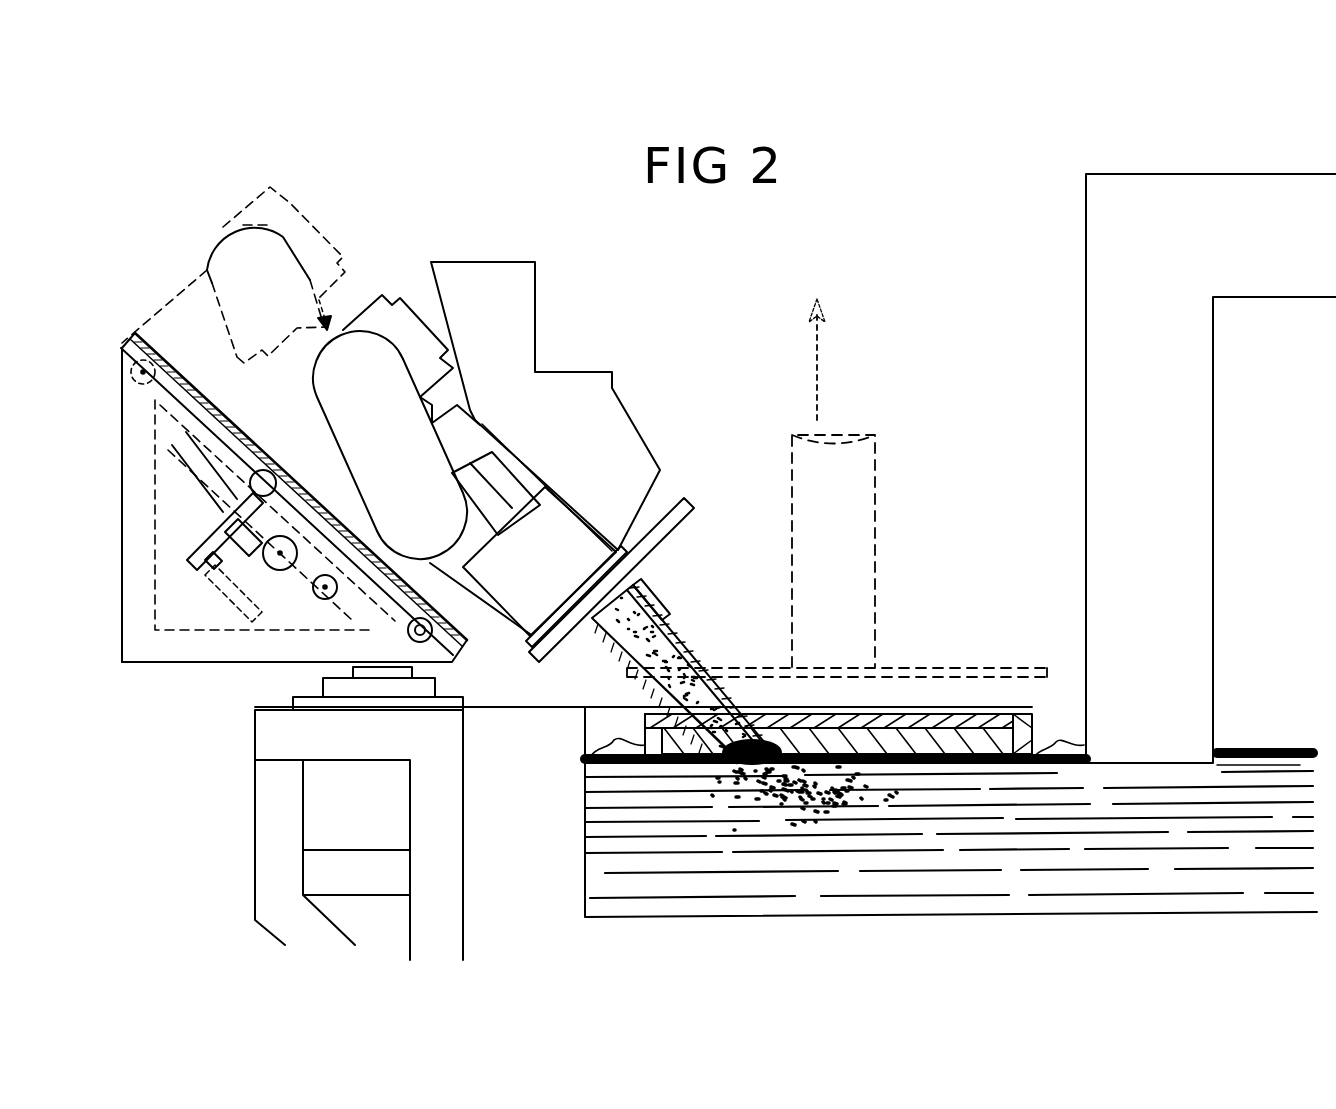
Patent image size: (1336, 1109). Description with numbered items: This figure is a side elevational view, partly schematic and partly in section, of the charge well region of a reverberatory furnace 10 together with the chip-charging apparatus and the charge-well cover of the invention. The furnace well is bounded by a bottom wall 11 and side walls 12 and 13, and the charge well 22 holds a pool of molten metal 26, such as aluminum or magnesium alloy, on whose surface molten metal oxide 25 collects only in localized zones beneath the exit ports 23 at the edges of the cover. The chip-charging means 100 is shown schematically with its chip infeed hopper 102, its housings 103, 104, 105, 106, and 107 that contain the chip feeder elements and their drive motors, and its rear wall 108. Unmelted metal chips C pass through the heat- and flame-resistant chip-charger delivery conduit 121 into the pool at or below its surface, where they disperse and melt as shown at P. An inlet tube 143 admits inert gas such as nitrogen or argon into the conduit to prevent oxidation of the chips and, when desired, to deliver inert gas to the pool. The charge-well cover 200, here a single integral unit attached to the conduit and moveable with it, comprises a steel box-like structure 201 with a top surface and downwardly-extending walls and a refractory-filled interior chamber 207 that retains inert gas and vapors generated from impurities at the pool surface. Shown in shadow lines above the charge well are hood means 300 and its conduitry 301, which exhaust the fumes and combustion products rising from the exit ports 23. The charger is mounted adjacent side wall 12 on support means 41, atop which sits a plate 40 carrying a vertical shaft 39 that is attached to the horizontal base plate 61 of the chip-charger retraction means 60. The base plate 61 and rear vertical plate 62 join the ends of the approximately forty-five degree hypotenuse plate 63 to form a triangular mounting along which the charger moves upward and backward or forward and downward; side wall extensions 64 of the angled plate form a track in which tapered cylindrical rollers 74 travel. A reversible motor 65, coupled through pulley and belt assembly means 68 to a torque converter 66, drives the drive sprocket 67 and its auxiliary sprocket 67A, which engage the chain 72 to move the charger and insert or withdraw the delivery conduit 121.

The reverberatory furnace 10 is at (1072, 197).
The bottom wall 11 is at (929, 954).
The side wall 12 is at (523, 929).
The side wall 13 is at (1150, 463).
The charge well 22 is at (575, 830).
The exit ports 23 is at (623, 720).
The molten metal oxide 25 is at (600, 745).
The molten metal 26 is at (833, 892).
The shaft 39 is at (362, 667).
The plate 40 is at (358, 677).
The support means 41 is at (275, 815).
The chip-charger retraction means 60 is at (98, 510).
The horizontal base plate 61 is at (145, 650).
The rear vertical plate 62 is at (130, 455).
The hypotenuse plate 63 is at (123, 377).
The side wall extensions 64 is at (132, 357).
The reversible motor 65 is at (228, 583).
The torque converter 66 is at (262, 532).
The drive sprocket 67 is at (280, 575).
The auxiliary sprocket 67A is at (279, 613).
The pulley and belt assembly means 68 is at (215, 540).
The chain 72 is at (167, 438).
The tapered cylindrical rollers 74 is at (128, 368).
The chip-charging means 100 is at (212, 226).
The chip infeed hopper 102 is at (476, 265).
The housing 103 is at (599, 459).
The housing 104 is at (566, 569).
The housing 105 is at (496, 493).
The housing 106 is at (358, 431).
The housing 107 is at (422, 459).
The rear wall 108 is at (293, 450).
The chip-charger delivery conduit 121 is at (672, 628).
The inlet tube 143 is at (668, 600).
The charge-well cover 200 is at (958, 700).
The steel box-like structure 201 is at (1040, 717).
The interior chamber 207 is at (917, 727).
The hood means 300 is at (888, 660).
The conduitry 301 is at (877, 573).
The metal chips C is at (697, 653).
The point of dispersion P is at (737, 832).